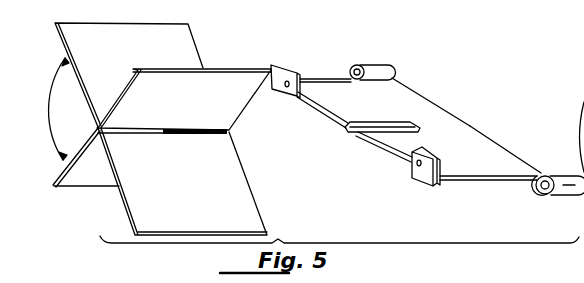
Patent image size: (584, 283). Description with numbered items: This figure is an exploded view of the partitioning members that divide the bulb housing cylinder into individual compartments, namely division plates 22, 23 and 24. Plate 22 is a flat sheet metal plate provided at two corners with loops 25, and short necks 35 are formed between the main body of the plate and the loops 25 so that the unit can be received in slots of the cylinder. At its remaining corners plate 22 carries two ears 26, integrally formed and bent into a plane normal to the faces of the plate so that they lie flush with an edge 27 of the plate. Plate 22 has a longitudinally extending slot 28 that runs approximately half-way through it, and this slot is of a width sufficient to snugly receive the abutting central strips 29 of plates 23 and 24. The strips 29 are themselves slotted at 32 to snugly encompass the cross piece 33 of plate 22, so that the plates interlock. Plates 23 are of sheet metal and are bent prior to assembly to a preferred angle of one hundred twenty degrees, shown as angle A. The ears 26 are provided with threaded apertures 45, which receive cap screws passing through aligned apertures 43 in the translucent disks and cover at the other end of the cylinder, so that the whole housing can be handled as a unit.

The division plate 22 is at (505, 150).
The division plate 23 is at (61, 40).
The division plate 24 is at (228, 68).
The loops 25 is at (367, 65).
The ears 26 is at (278, 65).
The edge 27 is at (383, 151).
The slot 28 is at (373, 125).
The central strips 29 is at (95, 127).
The slot 32 is at (228, 132).
The cross piece 33 is at (450, 125).
The short necks 35 is at (538, 173).
The apertures 43 is at (582, 104).
The apertures 45 is at (286, 88).
The angle A is at (55, 109).